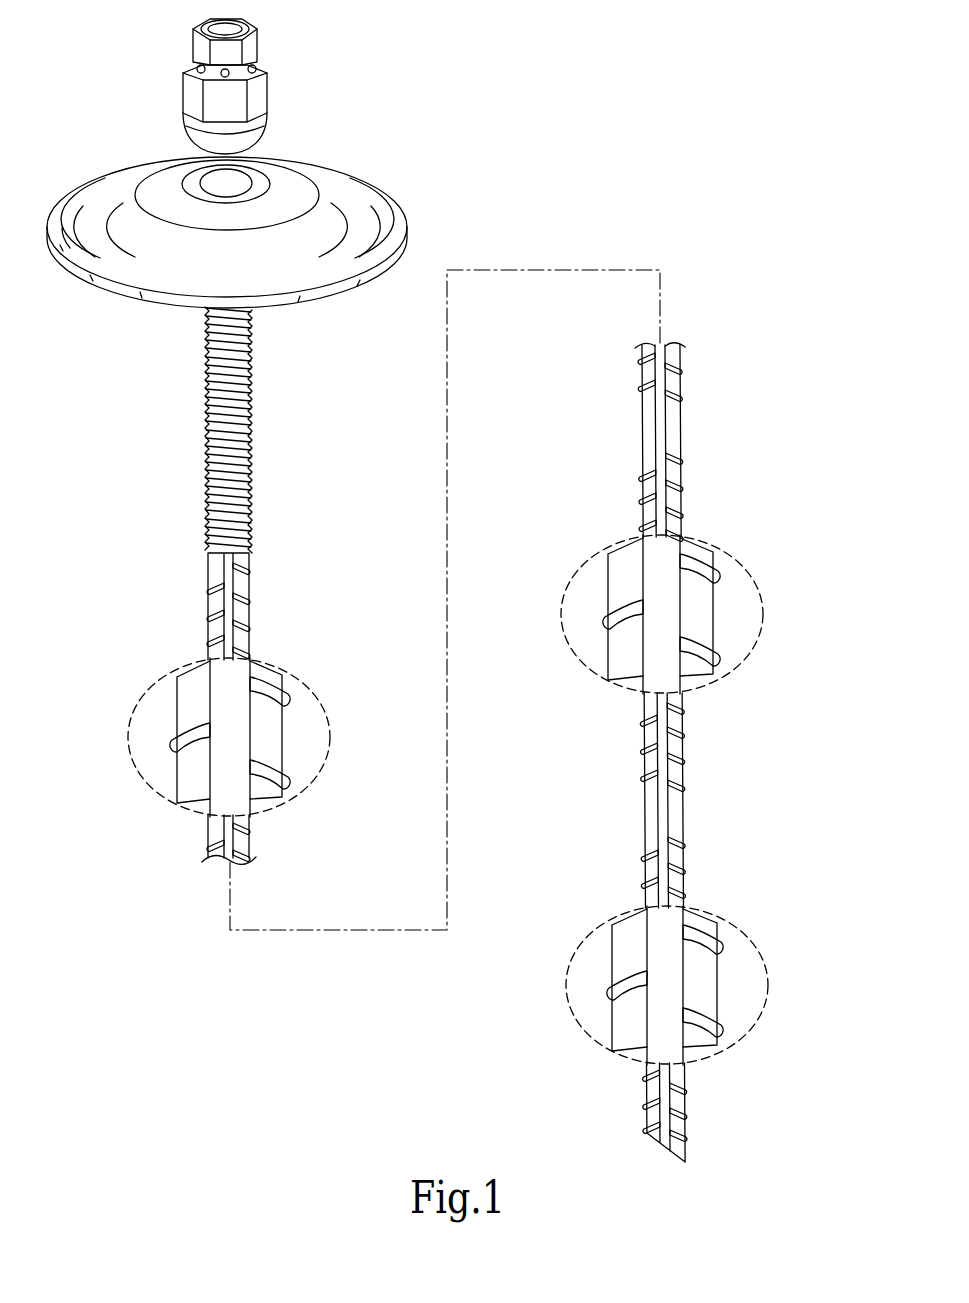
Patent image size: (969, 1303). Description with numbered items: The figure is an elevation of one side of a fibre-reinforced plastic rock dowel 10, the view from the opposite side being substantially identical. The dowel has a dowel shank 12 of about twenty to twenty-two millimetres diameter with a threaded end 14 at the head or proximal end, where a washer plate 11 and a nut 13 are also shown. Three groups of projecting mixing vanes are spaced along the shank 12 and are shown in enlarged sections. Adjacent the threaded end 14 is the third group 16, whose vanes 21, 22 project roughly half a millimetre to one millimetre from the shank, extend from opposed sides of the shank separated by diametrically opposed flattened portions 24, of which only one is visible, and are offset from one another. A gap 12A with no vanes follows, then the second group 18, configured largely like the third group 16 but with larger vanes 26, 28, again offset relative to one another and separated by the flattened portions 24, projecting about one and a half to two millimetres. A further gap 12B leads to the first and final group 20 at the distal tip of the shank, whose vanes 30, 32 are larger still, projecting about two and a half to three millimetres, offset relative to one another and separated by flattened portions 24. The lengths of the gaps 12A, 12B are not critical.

The rock dowel 10 is at (662, 128).
The washer plate 11 is at (108, 170).
The dowel shank 12 is at (641, 752).
The gap 12A is at (612, 443).
The gap 12B is at (609, 927).
The nut 13 is at (268, 92).
The threaded end 14 is at (206, 380).
The third group of projecting mixing vanes 16 is at (205, 603).
The second group of projecting mixing vanes 18 is at (632, 503).
The first group of projecting mixing vanes 20 is at (633, 886).
The vanes 21 is at (295, 786).
The vanes 22 is at (170, 740).
The flattened portions 24 is at (233, 677).
The vanes 26 is at (726, 664).
The vanes 28 is at (603, 617).
The vanes 30 is at (730, 1036).
The vanes 32 is at (607, 997).